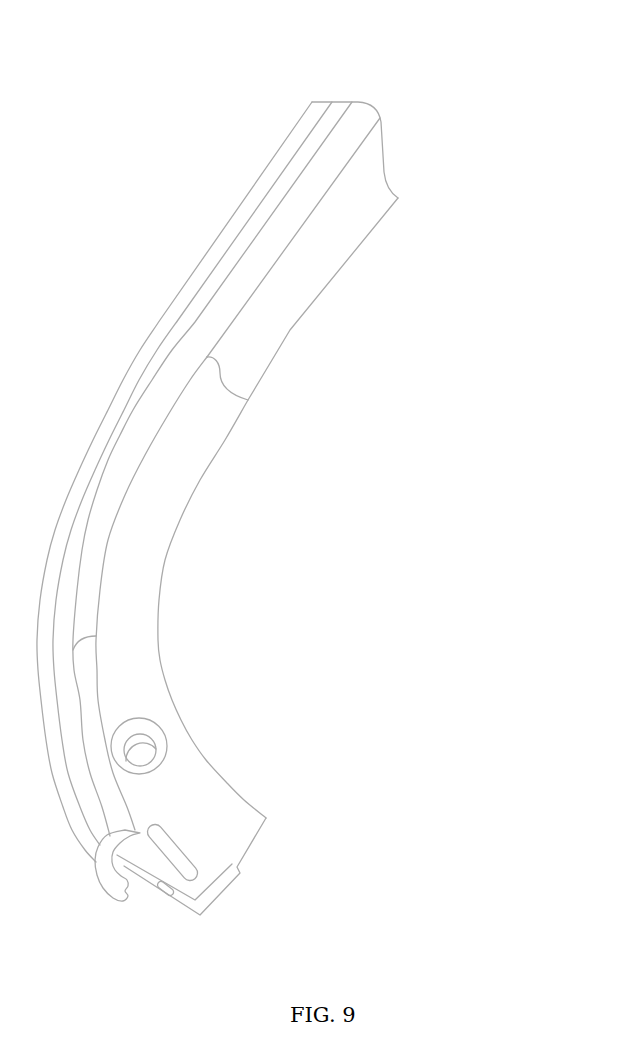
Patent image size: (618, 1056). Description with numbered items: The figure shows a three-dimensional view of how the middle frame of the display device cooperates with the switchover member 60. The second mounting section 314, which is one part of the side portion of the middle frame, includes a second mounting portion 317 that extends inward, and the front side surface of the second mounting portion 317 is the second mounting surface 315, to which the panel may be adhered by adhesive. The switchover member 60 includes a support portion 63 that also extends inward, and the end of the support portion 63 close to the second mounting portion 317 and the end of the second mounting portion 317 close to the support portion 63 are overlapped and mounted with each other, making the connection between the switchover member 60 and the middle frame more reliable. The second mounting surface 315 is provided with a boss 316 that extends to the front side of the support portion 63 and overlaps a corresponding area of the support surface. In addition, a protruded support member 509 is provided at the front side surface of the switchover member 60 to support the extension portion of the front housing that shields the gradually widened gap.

The switchover member 60 is at (252, 758).
The support portion 63 is at (178, 463).
The second mounting section 314 is at (243, 200).
The second mounting surface 315 is at (318, 265).
The boss 316 is at (355, 128).
The second mounting portion 317 is at (422, 181).
The protruded support member 509 is at (178, 857).